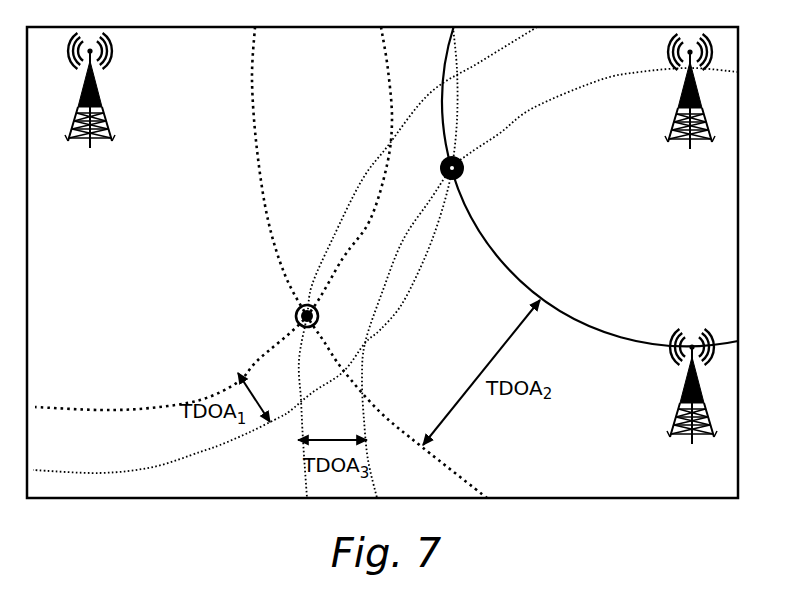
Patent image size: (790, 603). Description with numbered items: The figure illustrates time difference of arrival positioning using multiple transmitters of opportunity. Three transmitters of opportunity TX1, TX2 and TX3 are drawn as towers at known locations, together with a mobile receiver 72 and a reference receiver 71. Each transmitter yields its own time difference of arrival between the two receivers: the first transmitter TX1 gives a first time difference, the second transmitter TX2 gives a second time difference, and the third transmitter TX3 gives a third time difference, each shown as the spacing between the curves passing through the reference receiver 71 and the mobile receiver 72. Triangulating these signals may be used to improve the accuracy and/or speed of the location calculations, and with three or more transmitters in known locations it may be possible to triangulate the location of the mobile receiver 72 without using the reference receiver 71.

The reference receiver 71 is at (514, 174).
The mobile receiver 72 is at (296, 321).
The transmitter of opportunity TX1 is at (90, 109).
The transmitter of opportunity TX2 is at (690, 109).
The transmitter of opportunity TX3 is at (692, 402).